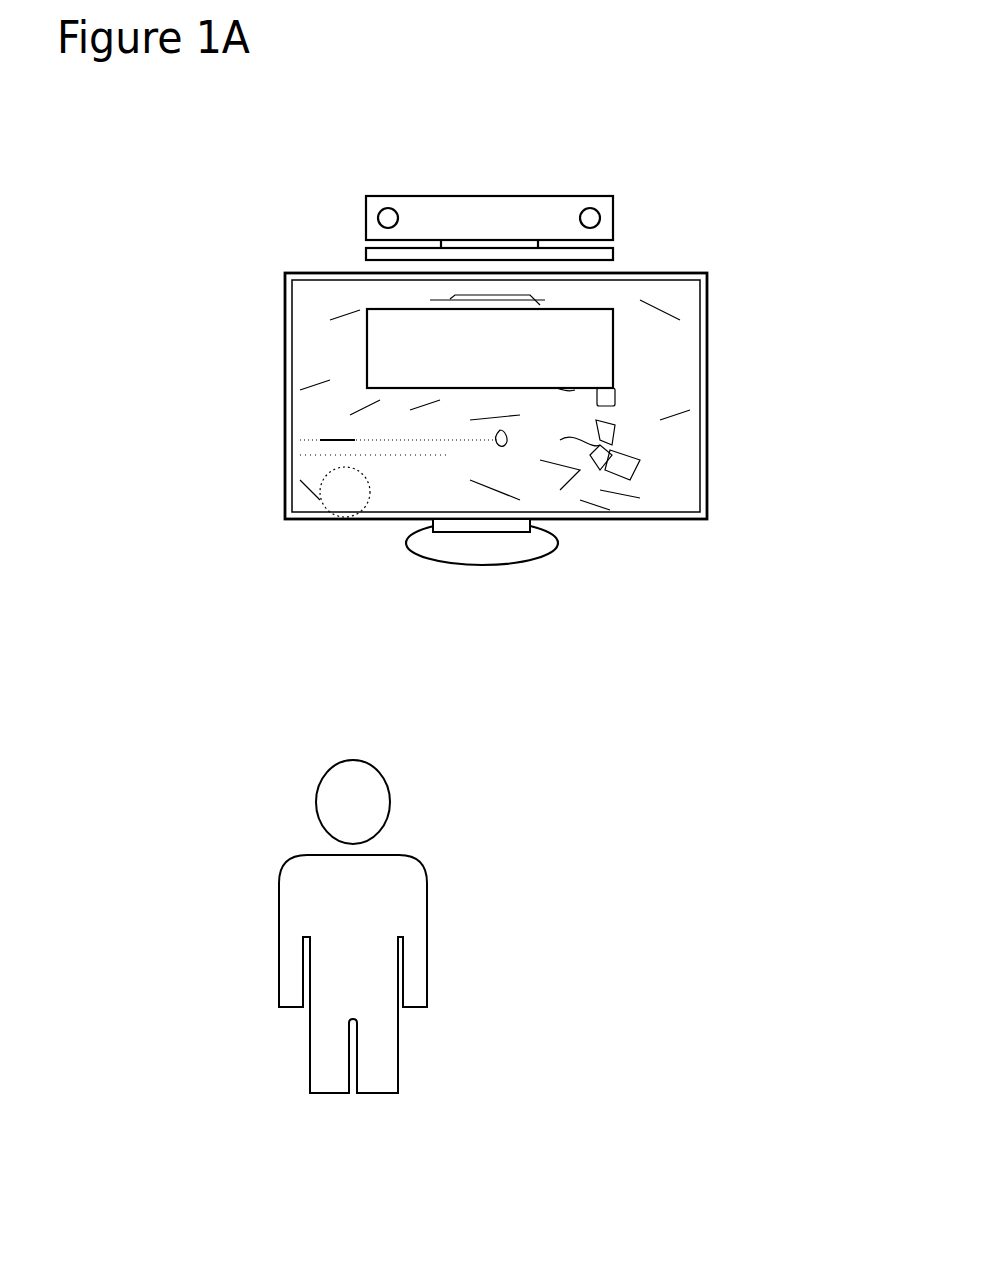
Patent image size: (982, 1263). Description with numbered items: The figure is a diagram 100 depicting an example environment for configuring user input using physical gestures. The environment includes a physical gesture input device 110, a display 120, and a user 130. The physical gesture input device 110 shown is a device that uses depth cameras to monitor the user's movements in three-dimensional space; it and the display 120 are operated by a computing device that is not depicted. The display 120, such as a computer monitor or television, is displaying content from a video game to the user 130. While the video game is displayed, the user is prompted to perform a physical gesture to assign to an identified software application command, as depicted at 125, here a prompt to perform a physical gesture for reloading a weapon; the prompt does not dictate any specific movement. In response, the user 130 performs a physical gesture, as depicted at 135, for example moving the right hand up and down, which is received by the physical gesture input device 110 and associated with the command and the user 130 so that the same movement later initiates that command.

The diagram 100 is at (738, 69).
The physical gesture input device 110 is at (742, 211).
The display 120 is at (412, 419).
The prompt to perform a physical gesture 125 is at (318, 380).
The user 130 is at (278, 875).
The user performing a physical gesture 135 is at (432, 923).